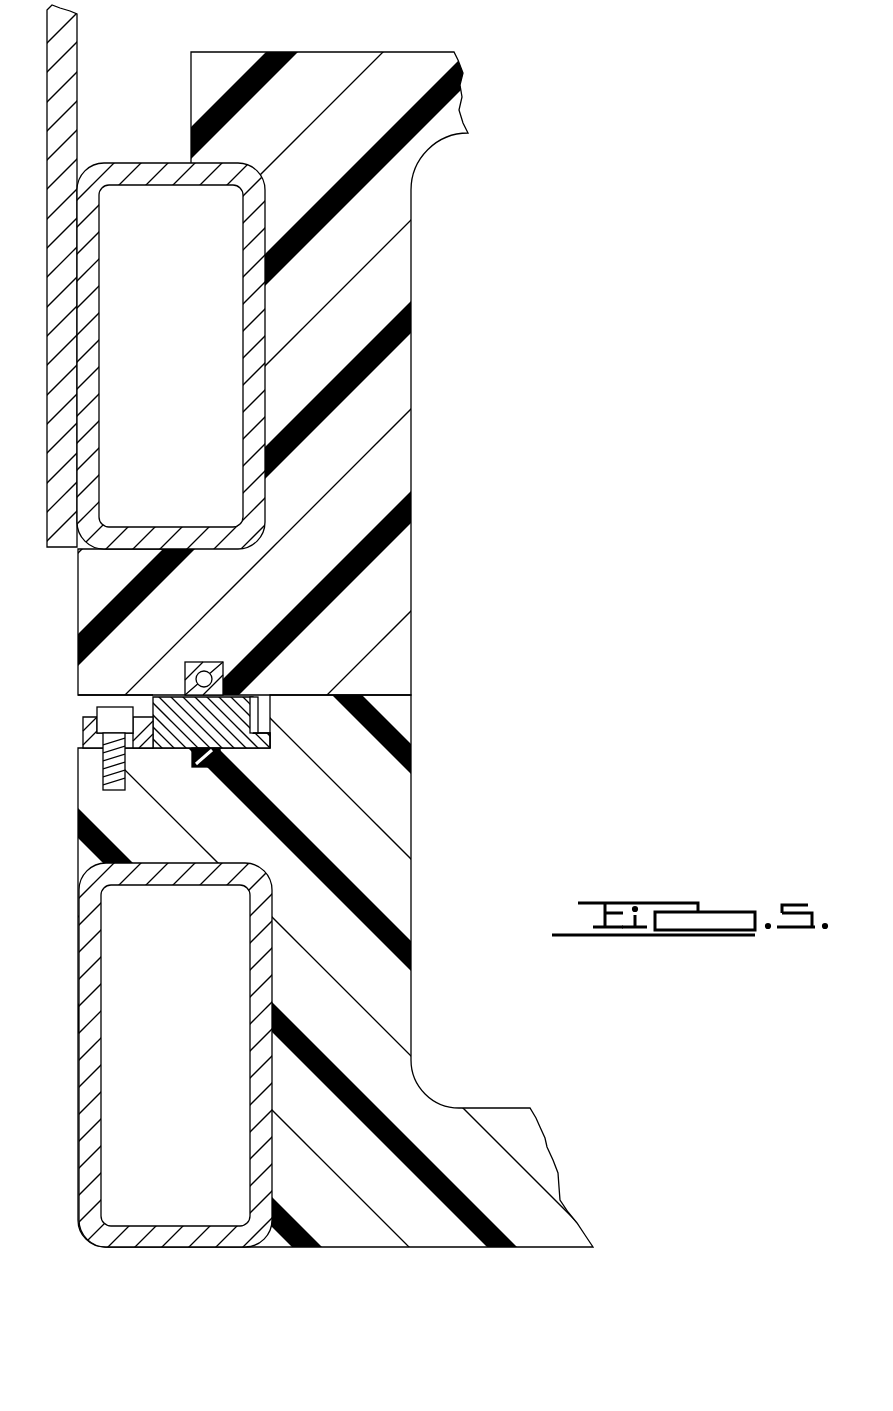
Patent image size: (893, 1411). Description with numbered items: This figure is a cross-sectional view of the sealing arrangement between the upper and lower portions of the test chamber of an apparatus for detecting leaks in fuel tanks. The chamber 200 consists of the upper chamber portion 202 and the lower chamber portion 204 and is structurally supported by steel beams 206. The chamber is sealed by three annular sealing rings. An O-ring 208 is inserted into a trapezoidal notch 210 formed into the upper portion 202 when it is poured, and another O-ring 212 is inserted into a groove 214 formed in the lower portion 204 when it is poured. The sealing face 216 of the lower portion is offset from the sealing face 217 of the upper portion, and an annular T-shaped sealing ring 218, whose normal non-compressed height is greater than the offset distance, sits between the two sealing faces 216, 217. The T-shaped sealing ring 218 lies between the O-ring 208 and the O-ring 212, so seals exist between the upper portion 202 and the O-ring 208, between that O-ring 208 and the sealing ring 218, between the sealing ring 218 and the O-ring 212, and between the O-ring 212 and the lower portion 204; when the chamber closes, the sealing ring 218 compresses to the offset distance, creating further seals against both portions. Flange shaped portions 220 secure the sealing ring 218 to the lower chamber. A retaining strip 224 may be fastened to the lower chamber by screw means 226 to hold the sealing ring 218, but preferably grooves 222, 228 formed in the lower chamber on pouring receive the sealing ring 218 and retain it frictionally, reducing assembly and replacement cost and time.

The chamber 200 is at (65, 52).
The upper chamber portion 202 is at (283, 75).
The lower chamber portion 204 is at (350, 933).
The steel beams 206 is at (138, 163).
The O-ring 208 is at (226, 668).
The trapezoidal notch 210 is at (205, 662).
The O-ring 212 is at (205, 763).
The groove 214 is at (222, 764).
The sealing face 216 is at (80, 745).
The sealing face 217 is at (93, 697).
The T-shaped sealing ring 218 is at (228, 710).
The flange shaped portions 220 is at (262, 737).
The groove 222 is at (258, 746).
The retaining strip 224 is at (147, 717).
The screw means 226 is at (113, 780).
The groove 228 is at (147, 748).